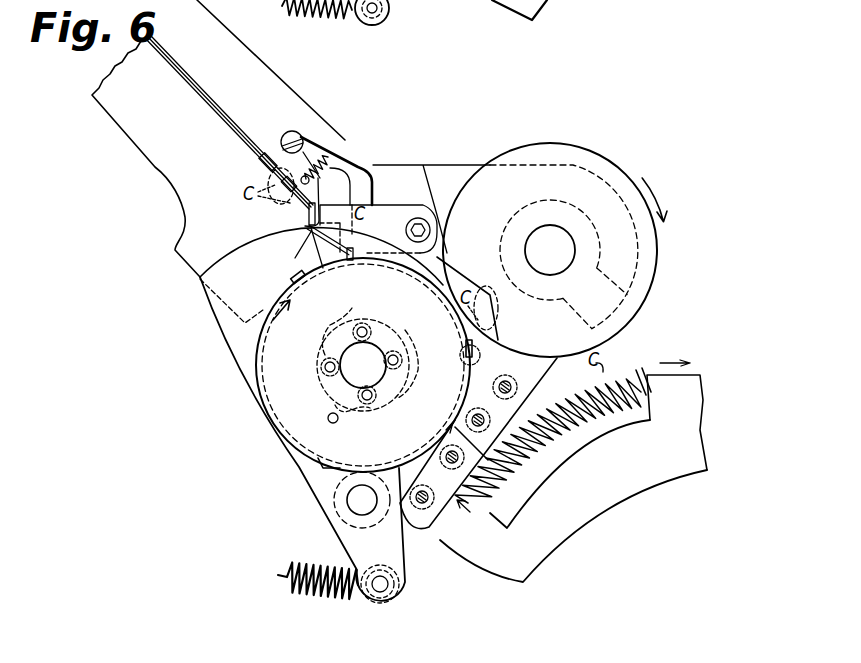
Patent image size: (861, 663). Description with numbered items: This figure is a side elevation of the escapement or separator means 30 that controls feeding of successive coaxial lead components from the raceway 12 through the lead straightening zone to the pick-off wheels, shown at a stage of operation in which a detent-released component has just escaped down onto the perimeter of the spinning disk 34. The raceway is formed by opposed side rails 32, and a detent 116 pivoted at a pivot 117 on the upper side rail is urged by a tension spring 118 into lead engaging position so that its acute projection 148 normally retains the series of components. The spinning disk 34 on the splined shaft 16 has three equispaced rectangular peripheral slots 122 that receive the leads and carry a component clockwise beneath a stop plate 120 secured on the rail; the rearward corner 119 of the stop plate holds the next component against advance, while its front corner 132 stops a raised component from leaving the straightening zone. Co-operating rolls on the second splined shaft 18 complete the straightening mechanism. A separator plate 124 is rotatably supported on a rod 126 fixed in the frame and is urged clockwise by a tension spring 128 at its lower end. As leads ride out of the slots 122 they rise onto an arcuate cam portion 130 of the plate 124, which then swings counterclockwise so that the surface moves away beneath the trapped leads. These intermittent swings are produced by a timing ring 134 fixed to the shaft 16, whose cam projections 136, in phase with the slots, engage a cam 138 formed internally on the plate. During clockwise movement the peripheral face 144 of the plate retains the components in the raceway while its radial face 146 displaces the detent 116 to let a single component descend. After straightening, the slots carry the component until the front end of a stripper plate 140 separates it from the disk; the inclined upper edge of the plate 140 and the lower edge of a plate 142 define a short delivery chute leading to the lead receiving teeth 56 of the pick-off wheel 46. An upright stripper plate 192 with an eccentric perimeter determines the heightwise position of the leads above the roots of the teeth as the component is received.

The raceway 12 is at (341, 148).
The splined shaft 16 is at (340, 372).
The splined shaft 18 is at (577, 247).
The separator means 30 is at (201, 387).
The side rail 32 is at (287, 82).
The spinning disk 34 is at (660, 271).
The pick-off wheel 46 is at (572, 447).
The lead receiving teeth 56 is at (643, 370).
The detent 116 is at (313, 158).
The pivot 117 is at (289, 131).
The tension spring 118 is at (333, 168).
The rearward corner 119 is at (353, 262).
The stop plate 120 is at (405, 210).
The peripheral slot 122 is at (296, 277).
The separator plate 124 is at (212, 317).
The rod 126 is at (357, 511).
The tension spring 128 is at (280, 576).
The cam portion 130 is at (403, 229).
The front corner 132 is at (437, 258).
The timing ring 134 is at (323, 357).
The cam projection 136 is at (338, 323).
The cam 138 is at (333, 423).
The stripper plate 140 is at (452, 513).
The plate 142 is at (500, 408).
The peripheral face 144 is at (250, 249).
The radial face 146 is at (323, 268).
The acute projection 148 is at (303, 217).
The upright stripper plate 192 is at (695, 419).